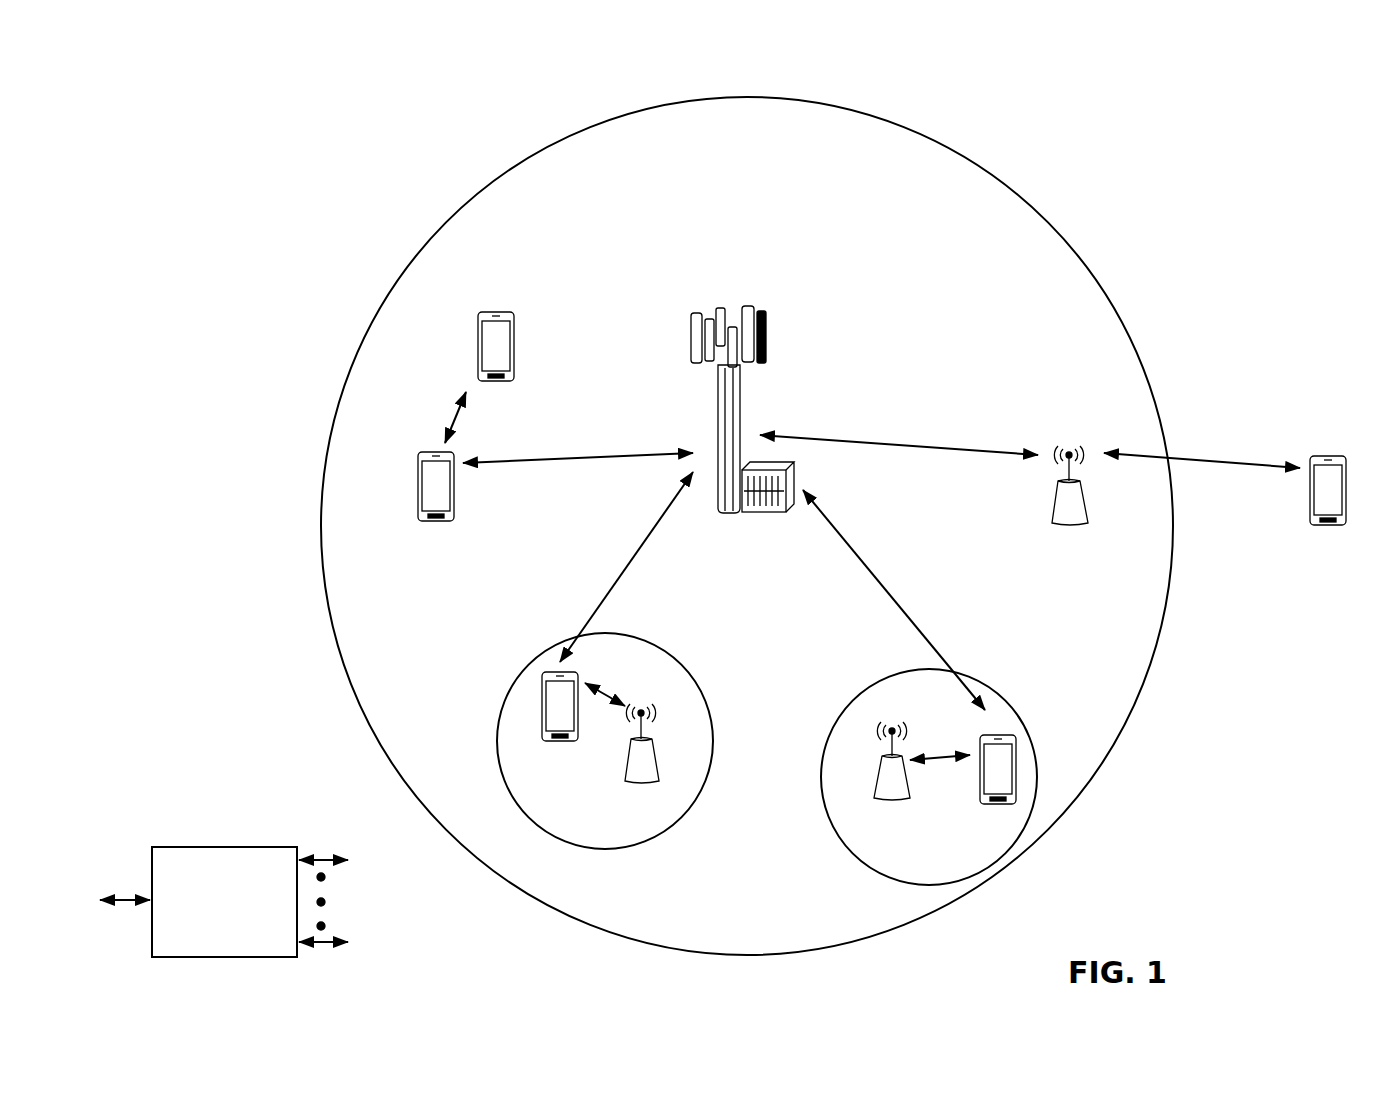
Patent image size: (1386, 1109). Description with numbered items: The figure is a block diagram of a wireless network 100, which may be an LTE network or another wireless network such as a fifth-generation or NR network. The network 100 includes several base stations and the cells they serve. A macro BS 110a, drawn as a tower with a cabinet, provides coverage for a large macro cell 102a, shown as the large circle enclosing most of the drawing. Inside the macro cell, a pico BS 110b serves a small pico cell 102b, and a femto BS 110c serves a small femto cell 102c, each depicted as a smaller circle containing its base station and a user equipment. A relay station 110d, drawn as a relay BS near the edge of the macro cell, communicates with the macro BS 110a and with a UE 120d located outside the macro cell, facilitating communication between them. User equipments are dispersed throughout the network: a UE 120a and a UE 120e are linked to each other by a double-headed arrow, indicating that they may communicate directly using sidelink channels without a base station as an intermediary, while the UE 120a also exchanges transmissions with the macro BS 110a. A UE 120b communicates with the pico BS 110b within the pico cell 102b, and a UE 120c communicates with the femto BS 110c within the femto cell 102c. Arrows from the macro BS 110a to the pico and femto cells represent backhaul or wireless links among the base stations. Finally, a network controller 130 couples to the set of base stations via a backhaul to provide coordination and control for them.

The wireless network 100 is at (205, 91).
The macro cell 102a is at (1040, 203).
The pico cell 102b is at (694, 677).
The femto cell 102c is at (863, 678).
The macro BS 110a is at (740, 300).
The pico BS 110b is at (661, 764).
The femto BS 110c is at (876, 780).
The relay station 110d is at (1072, 445).
The UE 120a is at (418, 484).
The UE 120b is at (552, 742).
The UE 120c is at (985, 806).
The UE 120d is at (1339, 454).
The UE 120e is at (478, 335).
The network controller 130 is at (224, 845).